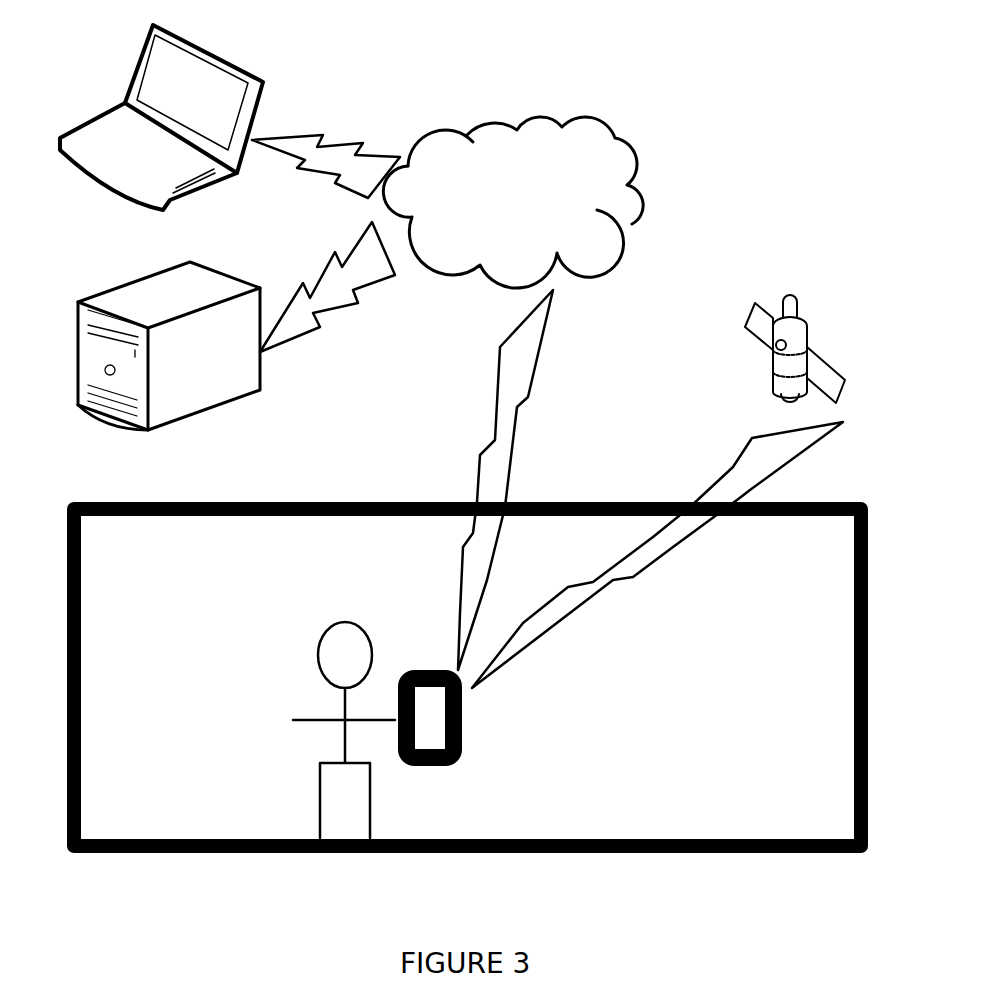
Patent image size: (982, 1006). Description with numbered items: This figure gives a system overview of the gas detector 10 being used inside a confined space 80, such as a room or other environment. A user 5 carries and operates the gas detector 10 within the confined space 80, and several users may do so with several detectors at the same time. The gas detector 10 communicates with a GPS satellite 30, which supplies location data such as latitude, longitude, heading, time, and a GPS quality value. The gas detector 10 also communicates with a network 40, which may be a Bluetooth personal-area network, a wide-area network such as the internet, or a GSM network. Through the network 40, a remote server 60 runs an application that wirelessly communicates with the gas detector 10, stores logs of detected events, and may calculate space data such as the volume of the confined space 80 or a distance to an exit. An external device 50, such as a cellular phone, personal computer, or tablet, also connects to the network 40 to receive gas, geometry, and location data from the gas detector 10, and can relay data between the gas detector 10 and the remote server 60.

The user 5 is at (309, 641).
The gas detector 10 is at (477, 742).
The GPS satellite 30 is at (802, 274).
The network 40 is at (557, 107).
The external device 50 is at (95, 99).
The remote server 60 is at (92, 283).
The confined space 80 is at (842, 679).